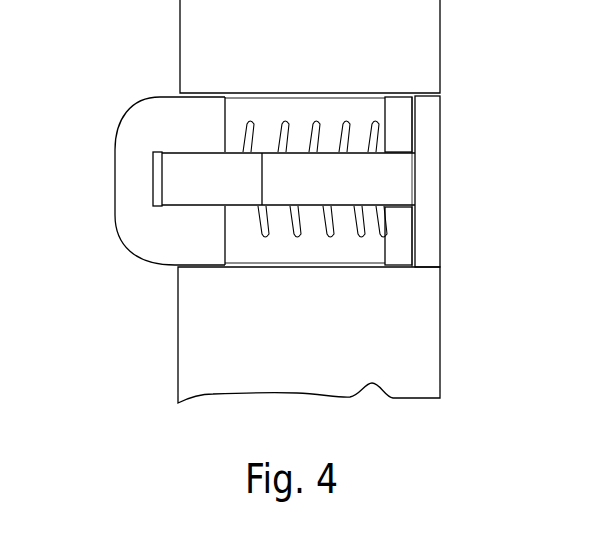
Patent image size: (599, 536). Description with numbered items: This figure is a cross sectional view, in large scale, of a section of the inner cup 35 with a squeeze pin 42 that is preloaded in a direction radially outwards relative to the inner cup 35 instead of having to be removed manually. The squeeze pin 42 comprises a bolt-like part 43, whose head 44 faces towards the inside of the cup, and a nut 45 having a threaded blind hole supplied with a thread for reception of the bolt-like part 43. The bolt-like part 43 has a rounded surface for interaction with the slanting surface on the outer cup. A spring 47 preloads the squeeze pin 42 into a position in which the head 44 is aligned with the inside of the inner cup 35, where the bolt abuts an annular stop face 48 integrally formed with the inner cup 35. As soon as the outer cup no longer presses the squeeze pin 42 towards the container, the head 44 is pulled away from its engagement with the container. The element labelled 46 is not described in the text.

The inner cup 35 is at (418, 38).
The squeeze pin 42 is at (418, 186).
The bolt-like part 43 is at (418, 219).
The head 44 is at (418, 152).
The nut 45 is at (158, 120).
The pin end 46 is at (172, 209).
The spring 47 is at (352, 232).
The annular stop face 48 is at (408, 130).